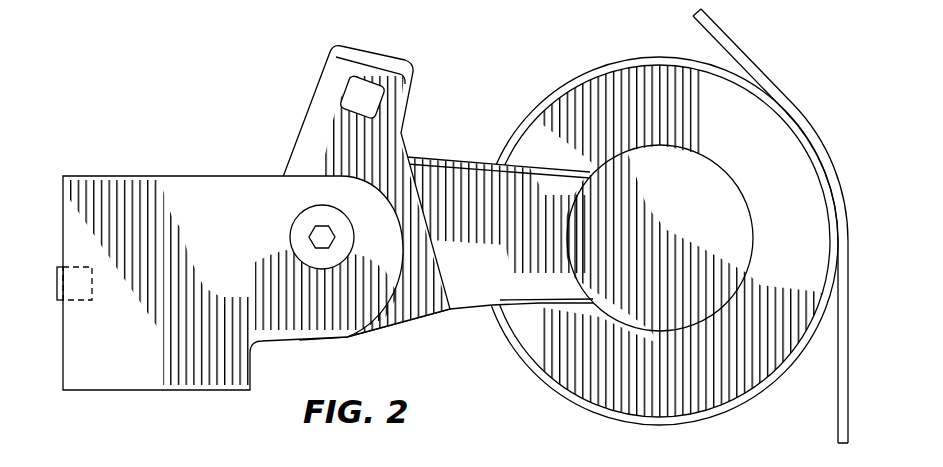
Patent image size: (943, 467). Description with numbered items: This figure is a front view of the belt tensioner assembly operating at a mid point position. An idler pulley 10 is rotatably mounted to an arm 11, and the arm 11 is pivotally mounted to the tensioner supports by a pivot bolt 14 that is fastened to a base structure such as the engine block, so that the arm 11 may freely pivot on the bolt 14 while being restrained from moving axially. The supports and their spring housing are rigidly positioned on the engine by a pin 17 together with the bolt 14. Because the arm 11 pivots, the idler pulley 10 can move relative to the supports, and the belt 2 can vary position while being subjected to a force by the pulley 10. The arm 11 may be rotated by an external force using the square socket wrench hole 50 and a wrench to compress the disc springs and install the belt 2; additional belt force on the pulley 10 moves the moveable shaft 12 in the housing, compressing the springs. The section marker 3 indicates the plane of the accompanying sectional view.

The belt 2 is at (742, 50).
The section line 3- 3 is at (278, 236).
The idler pulley 10 is at (693, 390).
The arm 11 is at (473, 295).
The moveable shaft 12 is at (57, 282).
The pivot bolt 14 is at (303, 226).
The pin 17 is at (78, 300).
The square socket wrench hole 50 is at (404, 92).